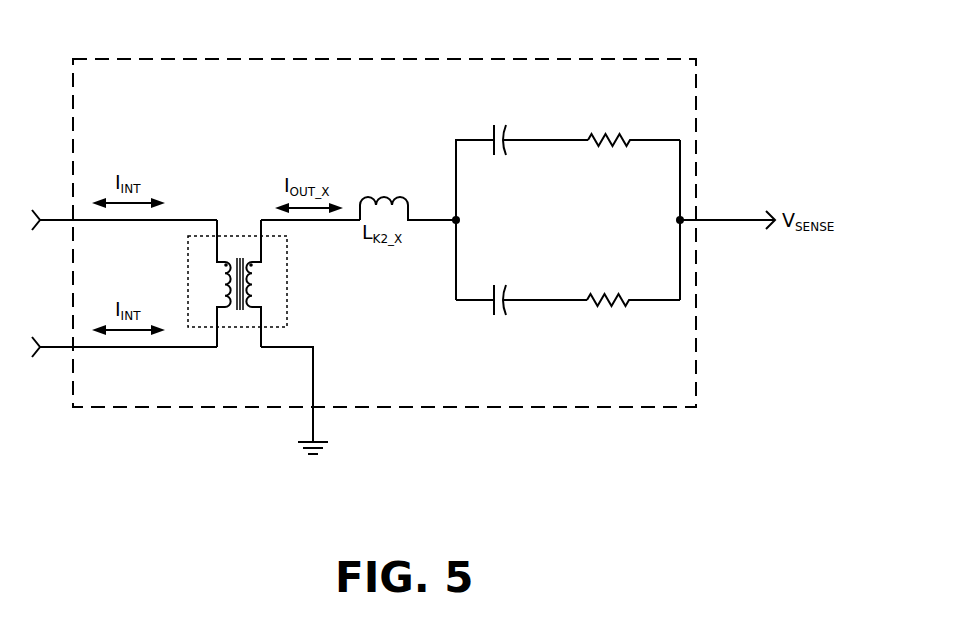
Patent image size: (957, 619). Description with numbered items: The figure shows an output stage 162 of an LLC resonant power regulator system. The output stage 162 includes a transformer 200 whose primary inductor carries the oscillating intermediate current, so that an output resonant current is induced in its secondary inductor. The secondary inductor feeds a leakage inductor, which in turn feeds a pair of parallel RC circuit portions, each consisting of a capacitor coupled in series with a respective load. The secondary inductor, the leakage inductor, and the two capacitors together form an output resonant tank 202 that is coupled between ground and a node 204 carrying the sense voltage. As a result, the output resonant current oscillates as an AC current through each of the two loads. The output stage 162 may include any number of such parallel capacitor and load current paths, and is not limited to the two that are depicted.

The output stage 162 is at (635, 59).
The transformer 200 is at (287, 300).
The output resonant tank 202 is at (370, 131).
The node 204 is at (658, 211).